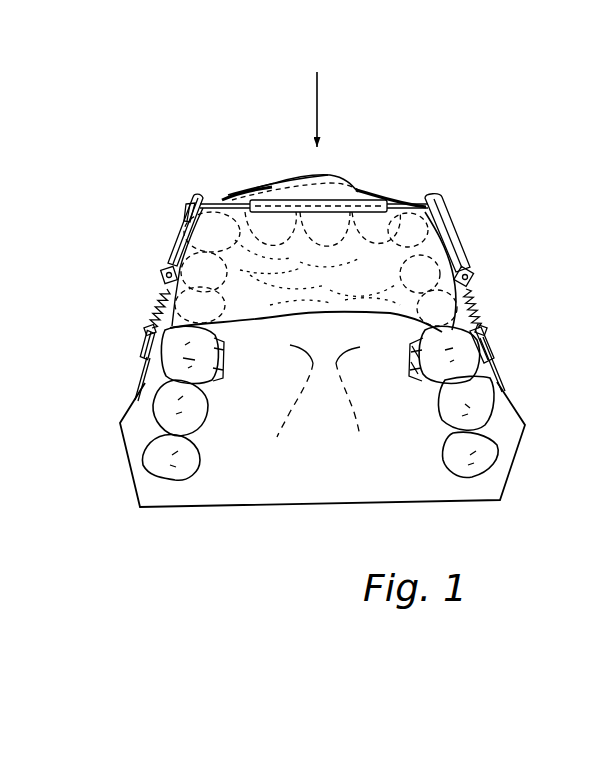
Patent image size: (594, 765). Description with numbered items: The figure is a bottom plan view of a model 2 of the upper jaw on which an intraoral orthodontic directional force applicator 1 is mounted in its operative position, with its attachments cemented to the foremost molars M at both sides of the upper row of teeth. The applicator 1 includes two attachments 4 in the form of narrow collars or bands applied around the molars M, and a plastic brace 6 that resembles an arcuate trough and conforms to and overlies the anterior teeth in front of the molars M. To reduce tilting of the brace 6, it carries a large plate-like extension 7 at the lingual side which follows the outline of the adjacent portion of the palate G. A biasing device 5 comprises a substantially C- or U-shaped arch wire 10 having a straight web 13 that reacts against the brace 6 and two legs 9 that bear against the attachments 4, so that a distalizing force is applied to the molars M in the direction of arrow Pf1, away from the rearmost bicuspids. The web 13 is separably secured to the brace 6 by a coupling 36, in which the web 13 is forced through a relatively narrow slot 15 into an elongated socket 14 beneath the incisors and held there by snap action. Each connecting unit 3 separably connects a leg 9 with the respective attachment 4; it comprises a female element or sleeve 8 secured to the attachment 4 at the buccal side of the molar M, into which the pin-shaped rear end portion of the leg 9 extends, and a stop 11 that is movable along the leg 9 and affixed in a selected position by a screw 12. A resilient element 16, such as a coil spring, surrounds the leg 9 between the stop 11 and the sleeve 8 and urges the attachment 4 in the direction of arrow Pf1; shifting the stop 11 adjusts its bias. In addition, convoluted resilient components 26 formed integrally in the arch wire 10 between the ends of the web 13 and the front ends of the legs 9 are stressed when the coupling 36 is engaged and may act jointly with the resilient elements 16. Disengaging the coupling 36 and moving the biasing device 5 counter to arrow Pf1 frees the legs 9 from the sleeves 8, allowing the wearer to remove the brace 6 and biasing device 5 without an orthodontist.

The intraoral orthodontic directional force applicator 1 is at (180, 147).
The model of the upper jaw 2 is at (255, 488).
The connecting unit 3 is at (143, 332).
The attachment 4 is at (220, 383).
The biasing device 5 is at (480, 244).
The brace 6 is at (340, 168).
The extension 7 is at (297, 283).
The female element 8 is at (147, 347).
The leg 9 is at (178, 248).
The arch wire 10 is at (418, 197).
The stop 11 is at (479, 265).
The screw 12 is at (472, 276).
The web 13 is at (231, 193).
The socket 14 is at (299, 200).
The slot 15 is at (373, 194).
The resilient element 16 is at (148, 298).
The resilient component 26 is at (185, 205).
The coupling 36 is at (283, 186).
The foremost molar M is at (212, 358).
The palate G is at (360, 470).
The direction of force arrow Pf1 is at (318, 100).